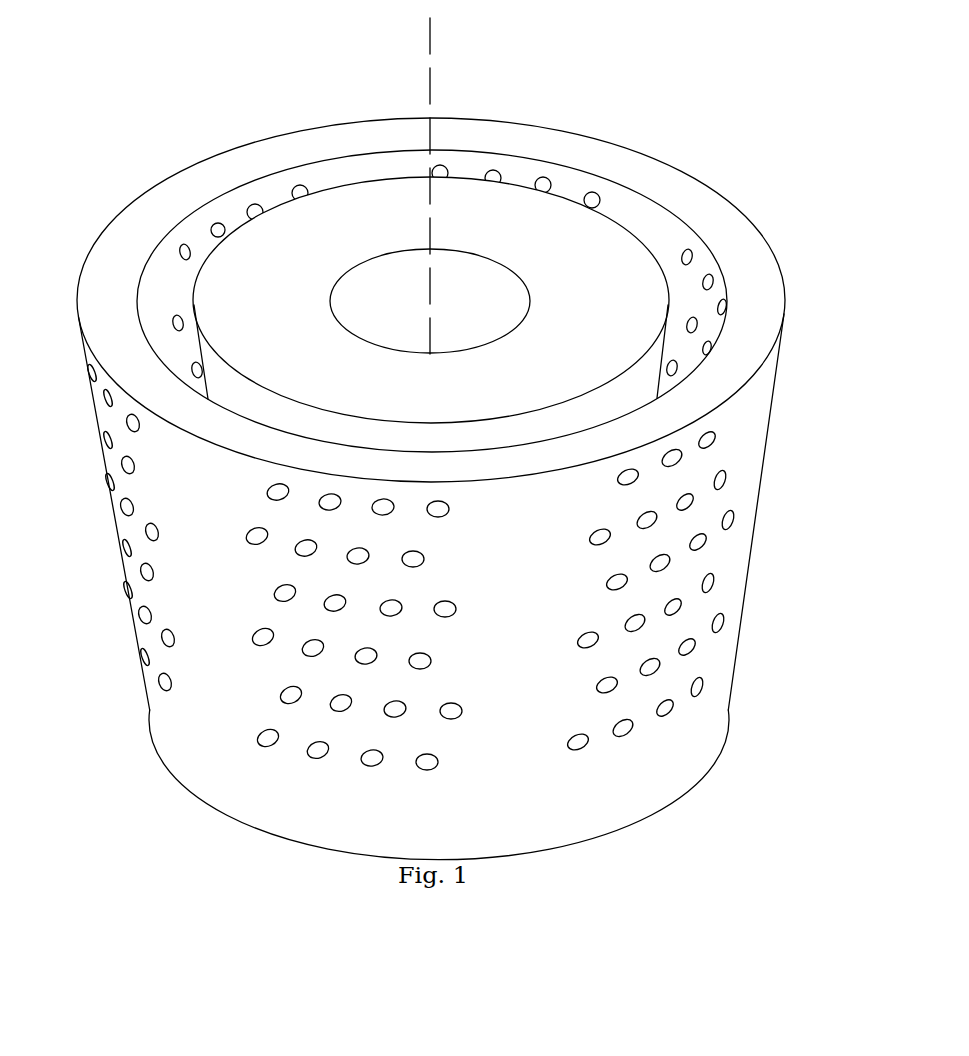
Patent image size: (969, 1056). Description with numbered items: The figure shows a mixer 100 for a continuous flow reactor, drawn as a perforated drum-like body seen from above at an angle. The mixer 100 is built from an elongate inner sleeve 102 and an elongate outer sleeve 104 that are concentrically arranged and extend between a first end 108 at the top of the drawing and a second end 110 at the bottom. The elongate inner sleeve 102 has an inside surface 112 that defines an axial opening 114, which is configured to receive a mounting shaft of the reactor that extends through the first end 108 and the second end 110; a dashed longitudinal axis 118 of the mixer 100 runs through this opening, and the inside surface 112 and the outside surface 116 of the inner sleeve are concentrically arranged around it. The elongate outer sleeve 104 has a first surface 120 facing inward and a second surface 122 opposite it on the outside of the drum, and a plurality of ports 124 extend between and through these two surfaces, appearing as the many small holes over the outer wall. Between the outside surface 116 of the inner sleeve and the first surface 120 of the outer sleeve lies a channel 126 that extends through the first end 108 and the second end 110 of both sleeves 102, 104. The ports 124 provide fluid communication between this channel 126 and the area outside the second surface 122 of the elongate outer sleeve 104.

The mixer 100 is at (125, 62).
The elongate inner sleeve 102 is at (624, 298).
The elongate outer sleeve 104 is at (779, 306).
The first end 108 is at (789, 254).
The second end 110 is at (752, 716).
The inside surface 112 is at (368, 316).
The axial opening 114 is at (400, 288).
The outside surface 116 is at (611, 391).
The longitudinal axis 118 is at (417, 43).
The first surface 120 is at (520, 168).
The second surface 122 is at (102, 457).
The ports 124 is at (222, 232).
The channel 126 is at (222, 380).